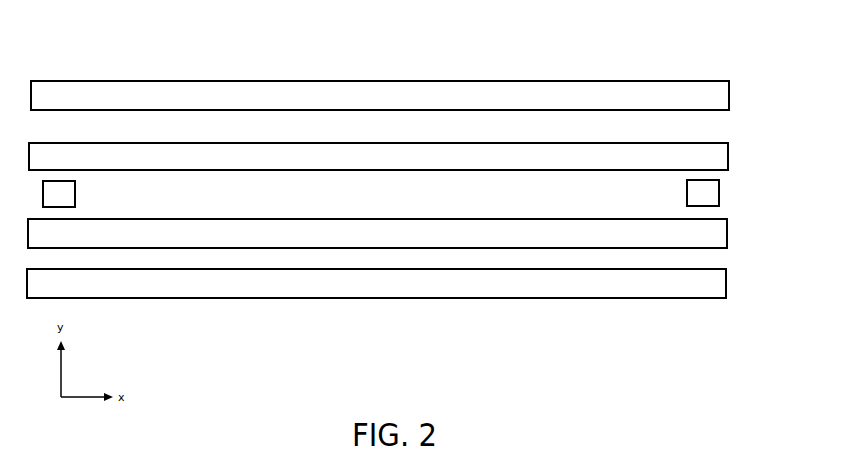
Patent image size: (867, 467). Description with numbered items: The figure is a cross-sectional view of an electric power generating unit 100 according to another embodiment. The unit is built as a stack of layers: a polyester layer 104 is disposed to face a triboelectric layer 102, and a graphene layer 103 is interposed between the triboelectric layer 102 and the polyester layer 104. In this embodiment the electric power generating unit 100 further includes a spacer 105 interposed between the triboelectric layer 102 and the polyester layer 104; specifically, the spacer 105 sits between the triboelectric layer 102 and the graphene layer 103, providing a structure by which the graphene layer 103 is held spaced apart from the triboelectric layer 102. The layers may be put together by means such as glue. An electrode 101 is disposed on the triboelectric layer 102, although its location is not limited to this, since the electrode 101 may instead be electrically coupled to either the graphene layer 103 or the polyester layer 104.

The electric power generating unit 100 is at (472, 54).
The electrode 101 is at (712, 288).
The triboelectric layer 102 is at (713, 237).
The graphene layer 103 is at (715, 160).
The polyester layer 104 is at (715, 100).
The spacer 105 is at (715, 193).